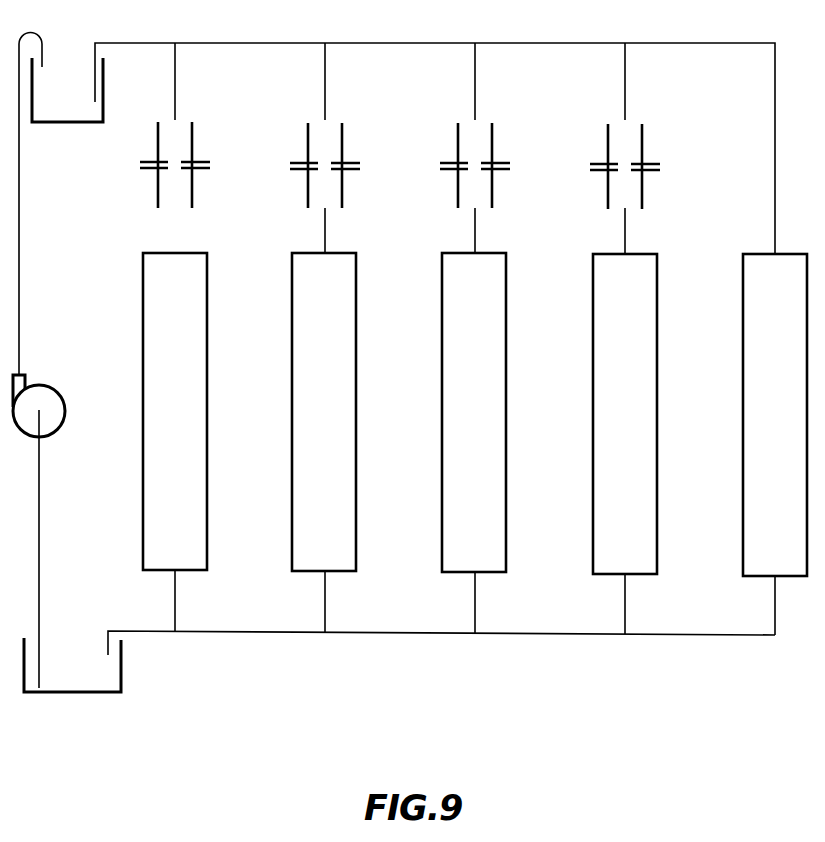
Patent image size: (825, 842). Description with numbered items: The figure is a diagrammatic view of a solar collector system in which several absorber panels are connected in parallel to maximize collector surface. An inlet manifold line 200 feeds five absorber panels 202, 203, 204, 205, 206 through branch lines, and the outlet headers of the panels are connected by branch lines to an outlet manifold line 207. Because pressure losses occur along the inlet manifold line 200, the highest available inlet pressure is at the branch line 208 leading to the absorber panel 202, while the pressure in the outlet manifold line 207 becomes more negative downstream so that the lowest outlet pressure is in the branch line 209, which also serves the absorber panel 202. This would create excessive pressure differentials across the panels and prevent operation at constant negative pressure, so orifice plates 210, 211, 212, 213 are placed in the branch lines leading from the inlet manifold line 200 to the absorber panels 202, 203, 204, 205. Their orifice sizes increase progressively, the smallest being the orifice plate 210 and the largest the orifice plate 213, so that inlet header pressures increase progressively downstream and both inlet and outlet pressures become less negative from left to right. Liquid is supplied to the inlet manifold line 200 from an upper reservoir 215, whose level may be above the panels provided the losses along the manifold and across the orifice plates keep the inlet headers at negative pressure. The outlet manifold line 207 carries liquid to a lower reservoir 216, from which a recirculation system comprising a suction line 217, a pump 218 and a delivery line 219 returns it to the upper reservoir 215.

The inlet manifold line 200 is at (133, 43).
The absorber panel 202 is at (188, 417).
The absorber panel 203 is at (335, 418).
The absorber panel 204 is at (485, 418).
The absorber panel 205 is at (636, 419).
The absorber panel 206 is at (786, 419).
The outlet manifold line 207 is at (395, 632).
The branch line 208 is at (178, 76).
The branch line 209 is at (176, 594).
The orifice plate 210 is at (200, 163).
The orifice plate 211 is at (350, 165).
The orifice plate 212 is at (500, 165).
The orifice plate 213 is at (650, 166).
The upper reservoir 215 is at (57, 123).
The lower reservoir 216 is at (122, 673).
The suction line 217 is at (40, 508).
The pump 218 is at (48, 394).
The delivery line 219 is at (20, 216).